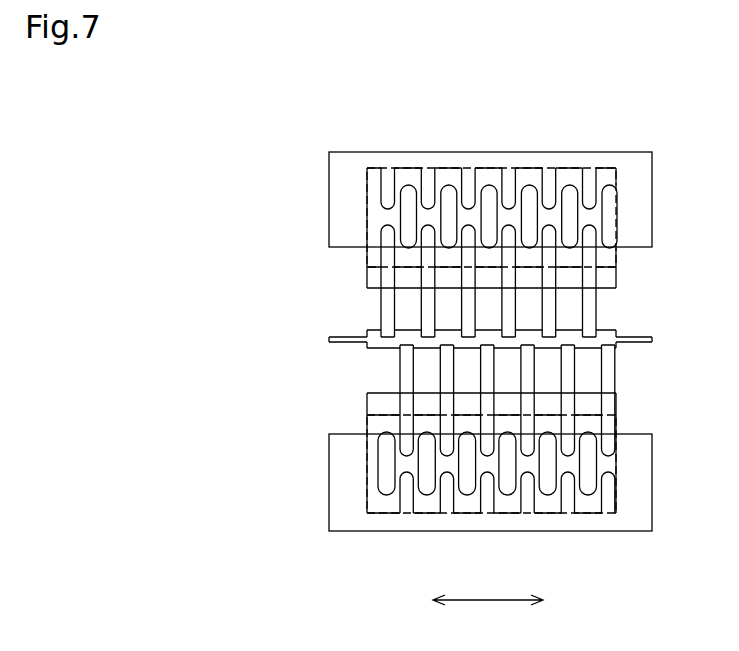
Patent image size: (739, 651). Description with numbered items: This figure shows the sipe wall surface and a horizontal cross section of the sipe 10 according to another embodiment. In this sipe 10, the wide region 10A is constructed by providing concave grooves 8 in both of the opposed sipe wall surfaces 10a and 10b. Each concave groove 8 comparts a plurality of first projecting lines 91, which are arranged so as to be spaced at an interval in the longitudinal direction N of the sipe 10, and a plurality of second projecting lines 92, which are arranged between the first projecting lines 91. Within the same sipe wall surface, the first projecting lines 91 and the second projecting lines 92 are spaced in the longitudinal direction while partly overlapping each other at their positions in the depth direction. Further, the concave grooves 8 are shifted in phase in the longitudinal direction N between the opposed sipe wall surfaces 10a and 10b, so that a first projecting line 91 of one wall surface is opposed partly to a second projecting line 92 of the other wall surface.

The concave groove 8 is at (492, 334).
The first projecting line 91 is at (490, 190).
The second projecting line 92 is at (516, 191).
The sipe 10 is at (343, 348).
The sipe wall surface 10a is at (390, 152).
The sipe wall surface 10b is at (388, 531).
The wide region 10A is at (587, 181).
The longitudinal direction N is at (488, 614).